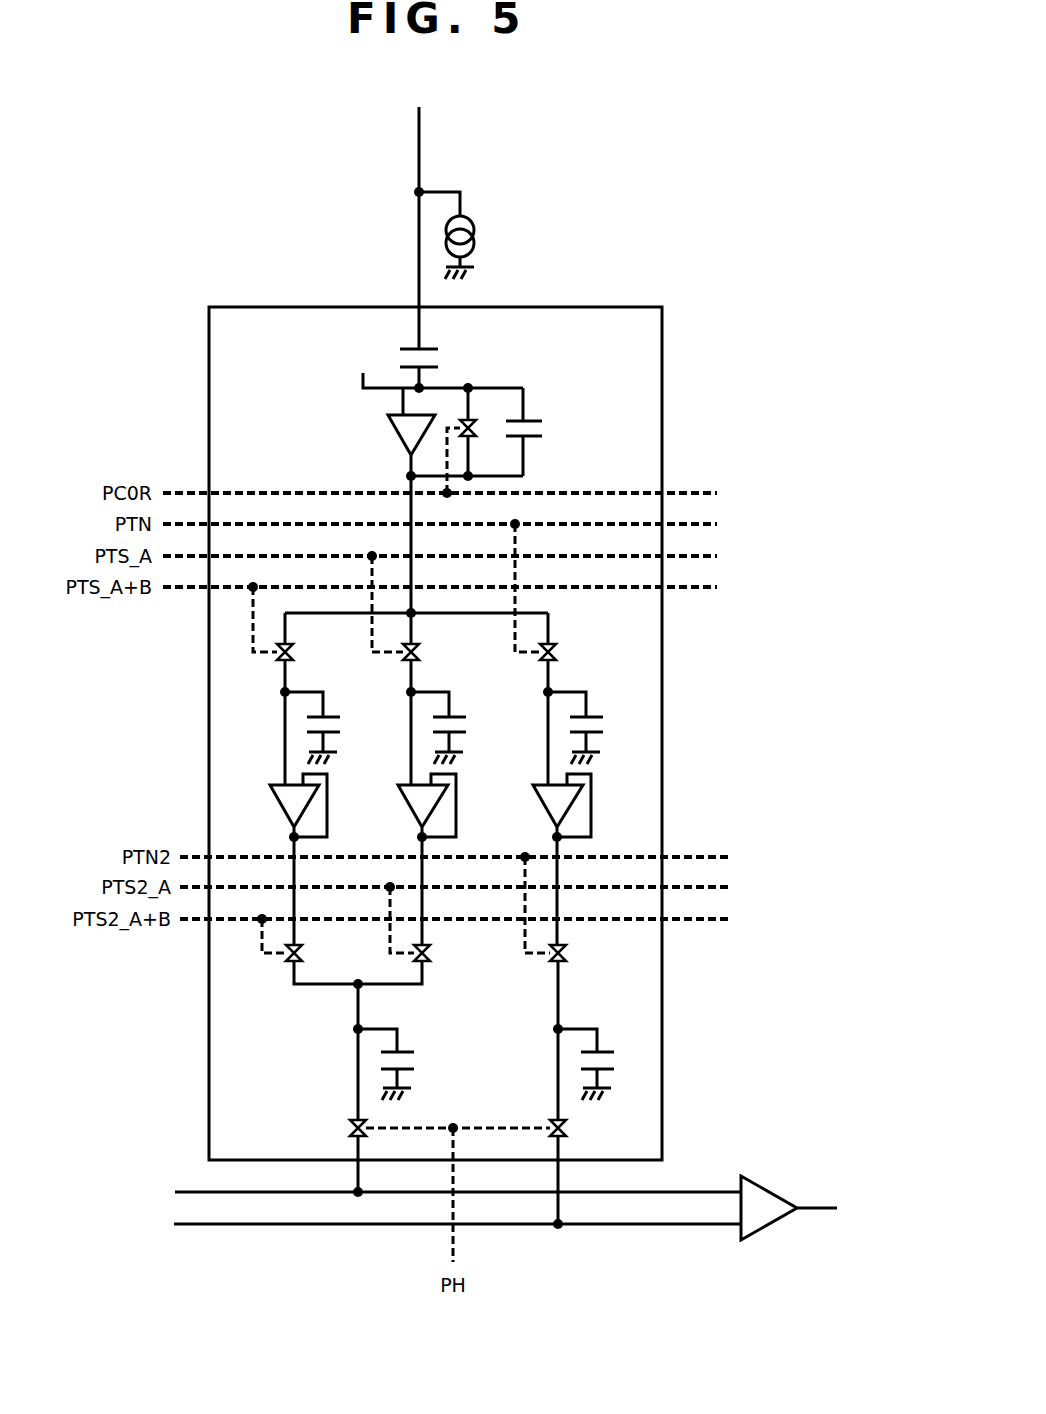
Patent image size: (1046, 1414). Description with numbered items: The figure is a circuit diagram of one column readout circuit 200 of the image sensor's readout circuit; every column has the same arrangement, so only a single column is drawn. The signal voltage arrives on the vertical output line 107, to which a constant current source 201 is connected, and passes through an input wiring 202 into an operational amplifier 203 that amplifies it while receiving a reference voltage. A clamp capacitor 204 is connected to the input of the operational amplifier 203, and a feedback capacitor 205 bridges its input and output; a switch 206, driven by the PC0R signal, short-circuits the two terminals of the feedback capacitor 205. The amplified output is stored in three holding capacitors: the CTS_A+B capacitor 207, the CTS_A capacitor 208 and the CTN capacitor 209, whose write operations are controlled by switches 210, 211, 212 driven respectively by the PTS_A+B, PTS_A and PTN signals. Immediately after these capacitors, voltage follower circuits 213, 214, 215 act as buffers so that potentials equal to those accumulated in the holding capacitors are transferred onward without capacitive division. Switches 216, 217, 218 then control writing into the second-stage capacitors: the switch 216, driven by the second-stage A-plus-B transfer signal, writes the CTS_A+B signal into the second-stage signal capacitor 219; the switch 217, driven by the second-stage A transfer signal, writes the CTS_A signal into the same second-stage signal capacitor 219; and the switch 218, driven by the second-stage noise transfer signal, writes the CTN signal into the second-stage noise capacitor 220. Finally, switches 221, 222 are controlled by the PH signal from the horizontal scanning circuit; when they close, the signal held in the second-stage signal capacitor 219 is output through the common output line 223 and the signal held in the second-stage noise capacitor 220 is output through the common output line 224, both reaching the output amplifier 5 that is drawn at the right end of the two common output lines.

The output amplifier 5 is at (770, 1190).
The vertical output line 107 is at (419, 152).
The column readout circuit 200 is at (250, 307).
The constant current source 201 is at (476, 232).
The input node wiring 202 is at (366, 373).
The operational amplifier 203 is at (396, 434).
The clamp capacitor C0 204 is at (440, 354).
The feedback capacitor Cf 205 is at (532, 425).
The switch 206 is at (474, 440).
The CTS_A+B capacitor 207 is at (331, 725).
The CTS_A capacitor 208 is at (457, 725).
The CTN capacitor 209 is at (594, 725).
The switch 210 is at (300, 627).
The switch 211 is at (423, 611).
The switch 212 is at (562, 595).
The voltage follower circuit 213 is at (276, 859).
The voltage follower circuit 214 is at (406, 859).
The voltage follower circuit 215 is at (541, 859).
The switch 216 is at (310, 943).
The switch 217 is at (437, 927).
The switch 218 is at (574, 912).
The CTS_2 capacitor 219 is at (402, 1062).
The CTN_2 capacitor 220 is at (602, 1062).
The switch 221 is at (331, 1130).
The switch 222 is at (587, 1130).
The common output line 223 is at (200, 1192).
The common output line 224 is at (194, 1224).